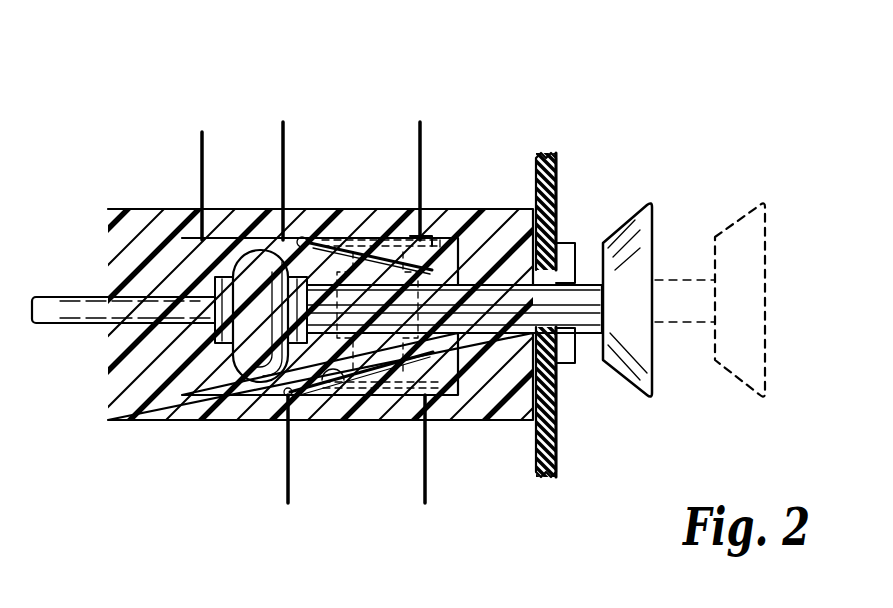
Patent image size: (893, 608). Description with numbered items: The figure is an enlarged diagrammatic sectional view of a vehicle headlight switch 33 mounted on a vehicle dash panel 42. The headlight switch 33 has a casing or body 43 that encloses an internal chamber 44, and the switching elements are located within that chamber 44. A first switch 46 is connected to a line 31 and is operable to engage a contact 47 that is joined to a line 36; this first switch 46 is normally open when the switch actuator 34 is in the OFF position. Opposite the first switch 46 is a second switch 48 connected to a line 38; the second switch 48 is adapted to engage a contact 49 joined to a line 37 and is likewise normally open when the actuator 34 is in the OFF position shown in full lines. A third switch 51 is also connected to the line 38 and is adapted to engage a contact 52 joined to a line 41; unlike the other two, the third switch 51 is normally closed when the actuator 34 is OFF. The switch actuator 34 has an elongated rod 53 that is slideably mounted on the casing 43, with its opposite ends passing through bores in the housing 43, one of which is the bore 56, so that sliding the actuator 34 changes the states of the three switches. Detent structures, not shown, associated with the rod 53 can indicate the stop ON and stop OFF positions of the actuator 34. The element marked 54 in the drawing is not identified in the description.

The line 31 is at (287, 488).
The headlight switch 33 is at (426, 97).
The switch actuator 34 is at (628, 240).
The line 36 is at (427, 473).
The line 37 is at (418, 152).
The line 38 is at (282, 130).
The line 41 is at (200, 150).
The vehicle dash panel 42 is at (533, 153).
The casing 43 is at (138, 223).
The internal chamber 44 is at (197, 378).
The first switch 46 is at (305, 397).
The contact 47 is at (498, 420).
The second switch 48 is at (298, 237).
The contact 49 is at (420, 240).
The third switch 51 is at (227, 237).
The contact 52 is at (187, 237).
The elongated rod 53 is at (510, 298).
The actuating rod 54 is at (152, 294).
The bore 56 is at (560, 417).